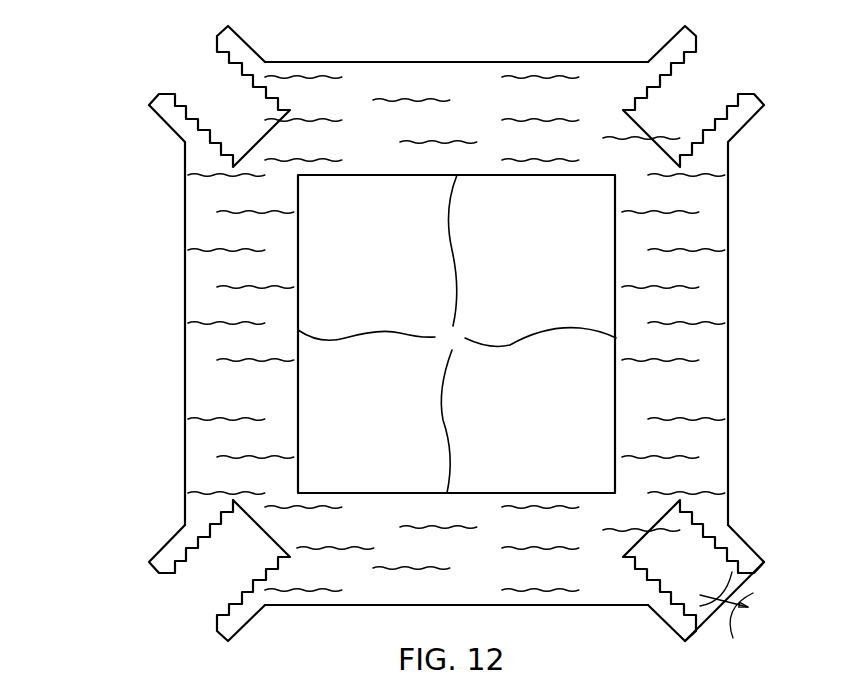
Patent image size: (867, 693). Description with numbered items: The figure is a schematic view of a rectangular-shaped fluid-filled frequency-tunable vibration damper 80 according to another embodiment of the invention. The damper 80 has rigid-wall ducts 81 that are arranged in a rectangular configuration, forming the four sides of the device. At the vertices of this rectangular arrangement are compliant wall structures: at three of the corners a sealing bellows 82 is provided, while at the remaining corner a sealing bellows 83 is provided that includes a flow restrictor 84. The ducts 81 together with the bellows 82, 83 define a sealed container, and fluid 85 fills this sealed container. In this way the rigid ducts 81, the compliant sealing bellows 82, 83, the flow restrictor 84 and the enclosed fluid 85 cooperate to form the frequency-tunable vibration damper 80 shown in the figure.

The fluid-filled frequency-tunable vibration damper 80 is at (64, 109).
The rigid-wall ducts 81 is at (611, 647).
The sealing bellows 82 is at (198, 128).
The sealing bellows 83 is at (741, 538).
The flow restrictor 84 is at (722, 620).
The fluid 85 is at (393, 100).